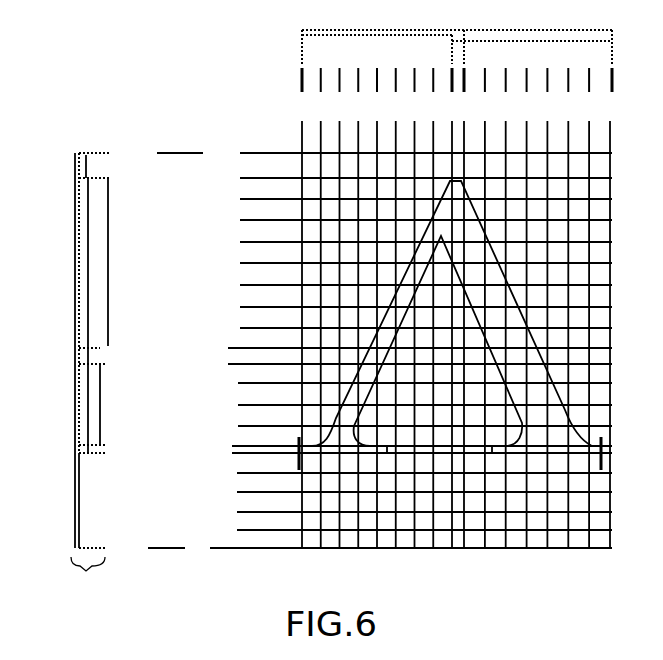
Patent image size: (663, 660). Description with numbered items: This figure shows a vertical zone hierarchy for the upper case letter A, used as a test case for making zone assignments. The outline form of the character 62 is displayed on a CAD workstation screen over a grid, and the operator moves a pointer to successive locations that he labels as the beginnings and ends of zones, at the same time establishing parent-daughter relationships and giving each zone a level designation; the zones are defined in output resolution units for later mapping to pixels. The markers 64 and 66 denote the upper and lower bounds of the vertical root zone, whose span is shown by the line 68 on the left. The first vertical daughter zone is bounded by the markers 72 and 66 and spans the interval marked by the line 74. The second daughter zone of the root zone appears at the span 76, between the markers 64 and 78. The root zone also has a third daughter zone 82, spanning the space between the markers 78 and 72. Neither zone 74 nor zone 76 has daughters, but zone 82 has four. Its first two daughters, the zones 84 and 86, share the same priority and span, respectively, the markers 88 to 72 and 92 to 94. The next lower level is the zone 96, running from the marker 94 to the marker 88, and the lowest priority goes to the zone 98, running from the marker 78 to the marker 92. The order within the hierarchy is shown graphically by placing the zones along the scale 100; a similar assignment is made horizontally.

The outline form of the character 62 is at (490, 237).
The marker 64 is at (248, 153).
The marker 66 is at (222, 549).
The root zone 68 is at (75, 277).
The marker 72 is at (238, 455).
The first vertical daughter zone 74 is at (78, 497).
The second daughter zone 76 is at (88, 164).
The marker 78 is at (250, 178).
The third daughter zone 82 is at (90, 247).
The zone 84 is at (98, 450).
The zone 86 is at (94, 354).
The marker 88 is at (238, 444).
The marker 92 is at (236, 348).
The marker 94 is at (238, 365).
The zone 96 is at (100, 412).
The zone 98 is at (109, 288).
The scale 100 is at (88, 574).